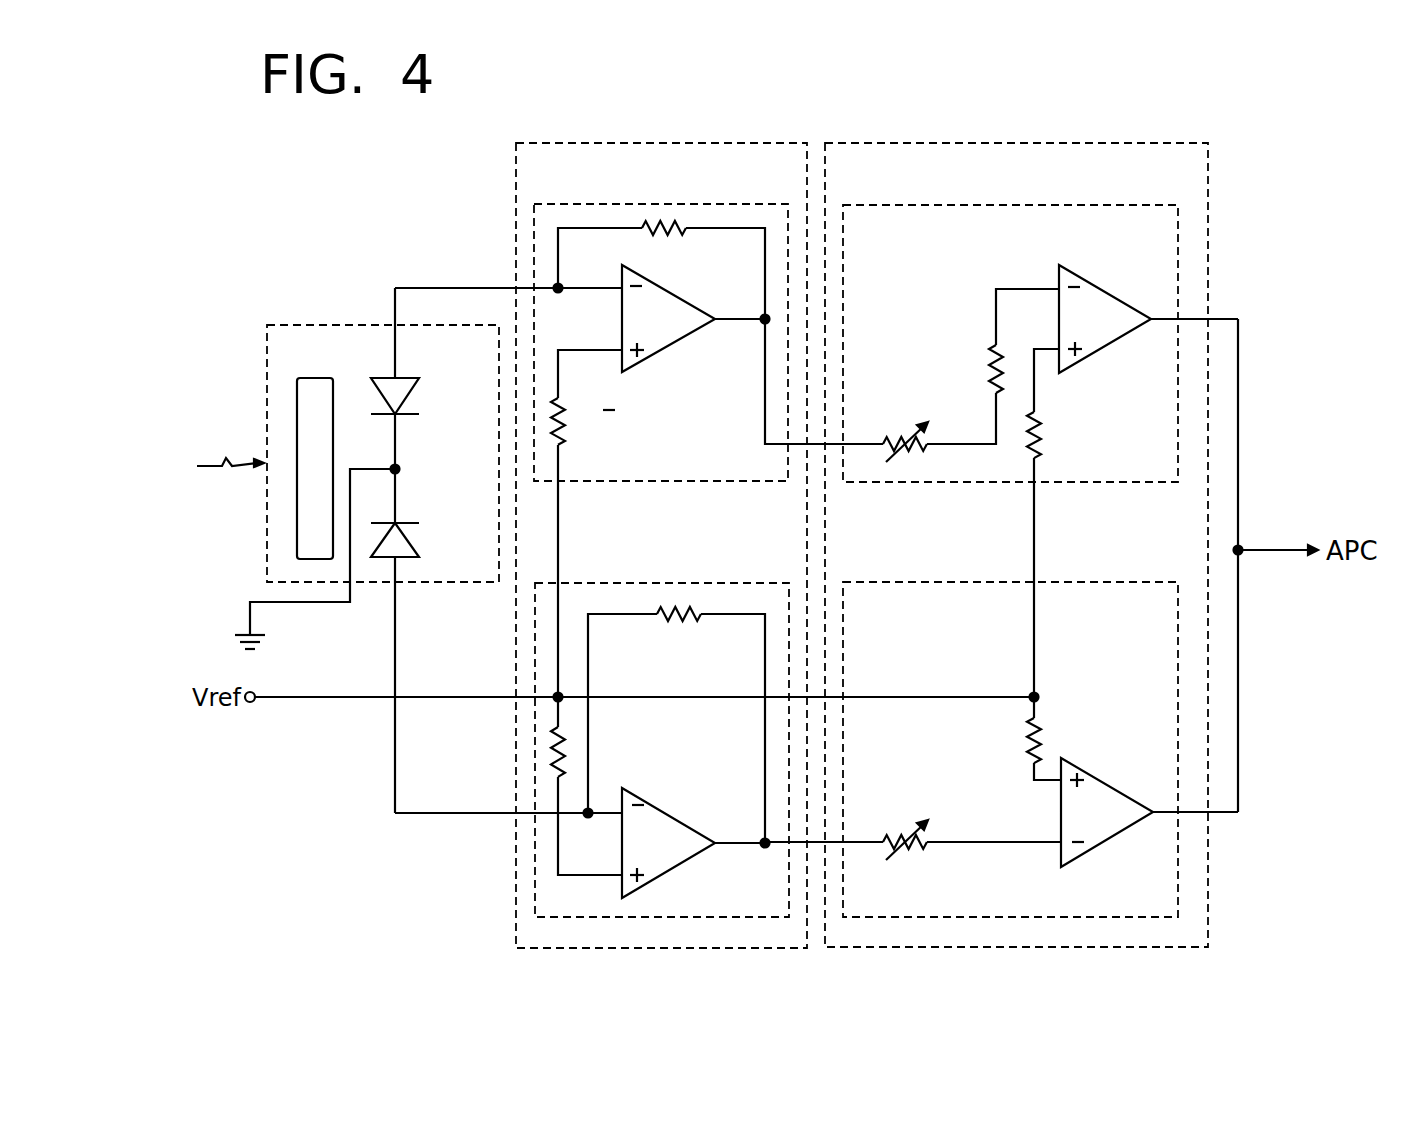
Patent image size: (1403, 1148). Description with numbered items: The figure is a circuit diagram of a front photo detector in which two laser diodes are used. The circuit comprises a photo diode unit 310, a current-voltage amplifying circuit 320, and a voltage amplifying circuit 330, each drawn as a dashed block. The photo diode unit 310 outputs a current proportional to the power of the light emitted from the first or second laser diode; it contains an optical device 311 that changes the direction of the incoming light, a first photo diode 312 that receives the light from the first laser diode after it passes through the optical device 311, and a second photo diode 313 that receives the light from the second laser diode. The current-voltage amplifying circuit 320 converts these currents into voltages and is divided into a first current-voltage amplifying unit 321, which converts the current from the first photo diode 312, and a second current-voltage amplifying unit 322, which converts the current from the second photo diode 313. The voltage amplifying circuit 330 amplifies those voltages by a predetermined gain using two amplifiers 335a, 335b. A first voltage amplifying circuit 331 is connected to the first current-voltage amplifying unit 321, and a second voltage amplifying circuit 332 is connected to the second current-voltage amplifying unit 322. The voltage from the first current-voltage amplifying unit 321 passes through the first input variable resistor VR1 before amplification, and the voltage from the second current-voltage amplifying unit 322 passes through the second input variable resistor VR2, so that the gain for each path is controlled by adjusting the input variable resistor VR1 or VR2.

The photo diode unit 310 is at (293, 323).
The optical device 311 is at (313, 378).
The first photo diode 312 is at (413, 542).
The second photo diode 313 is at (412, 399).
The current-voltage amplifying circuit 320 is at (662, 143).
The first current-voltage amplifying unit 321 is at (662, 583).
The second current-voltage amplifying unit 322 is at (662, 204).
The voltage amplifying circuit 330 is at (1046, 143).
The first voltage amplifying circuit 331 is at (1083, 582).
The second voltage amplifying circuit 332 is at (1015, 205).
The amplifier 335a is at (1122, 300).
The amplifier 335b is at (1122, 787).
The first input variable resistor VR1 is at (906, 824).
The second input variable resistor VR2 is at (905, 427).